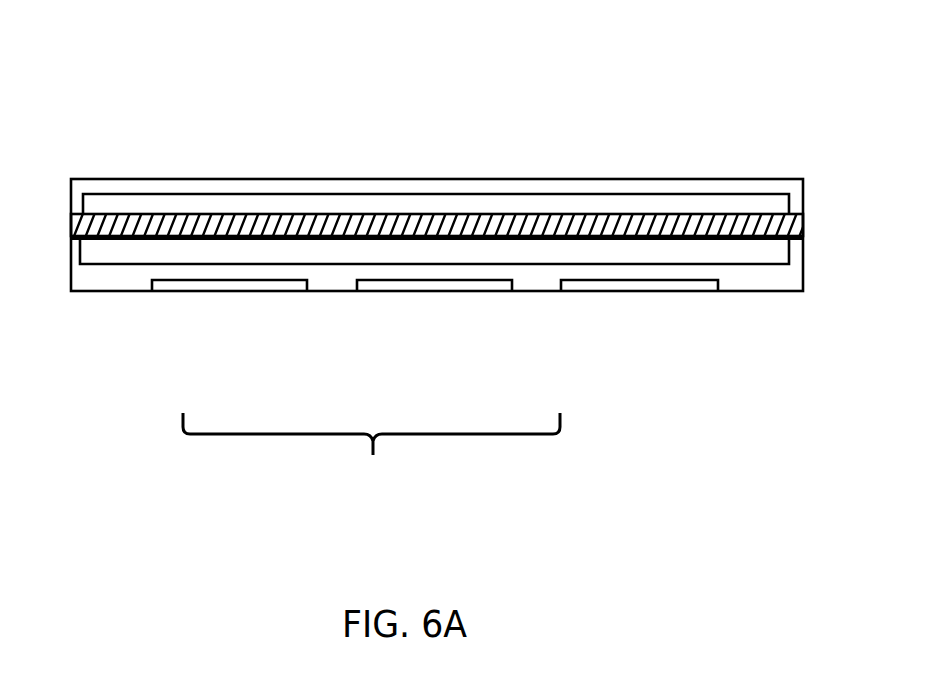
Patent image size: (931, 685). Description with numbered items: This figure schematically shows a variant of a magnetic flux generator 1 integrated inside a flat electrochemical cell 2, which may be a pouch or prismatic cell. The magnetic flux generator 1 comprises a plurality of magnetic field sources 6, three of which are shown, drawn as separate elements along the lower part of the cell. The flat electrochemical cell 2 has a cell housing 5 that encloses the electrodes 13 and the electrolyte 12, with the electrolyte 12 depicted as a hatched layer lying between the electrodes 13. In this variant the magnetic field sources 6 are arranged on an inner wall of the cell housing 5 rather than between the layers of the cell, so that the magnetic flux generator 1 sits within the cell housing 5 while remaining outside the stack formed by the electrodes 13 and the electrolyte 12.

The magnetic flux generator 1 is at (371, 452).
The flat electrochemical cell 2 is at (441, 205).
The cell housing 5 is at (111, 185).
The magnetic field sources 6 is at (238, 285).
The electrolyte 12 is at (607, 225).
The electrodes 13 is at (677, 207).